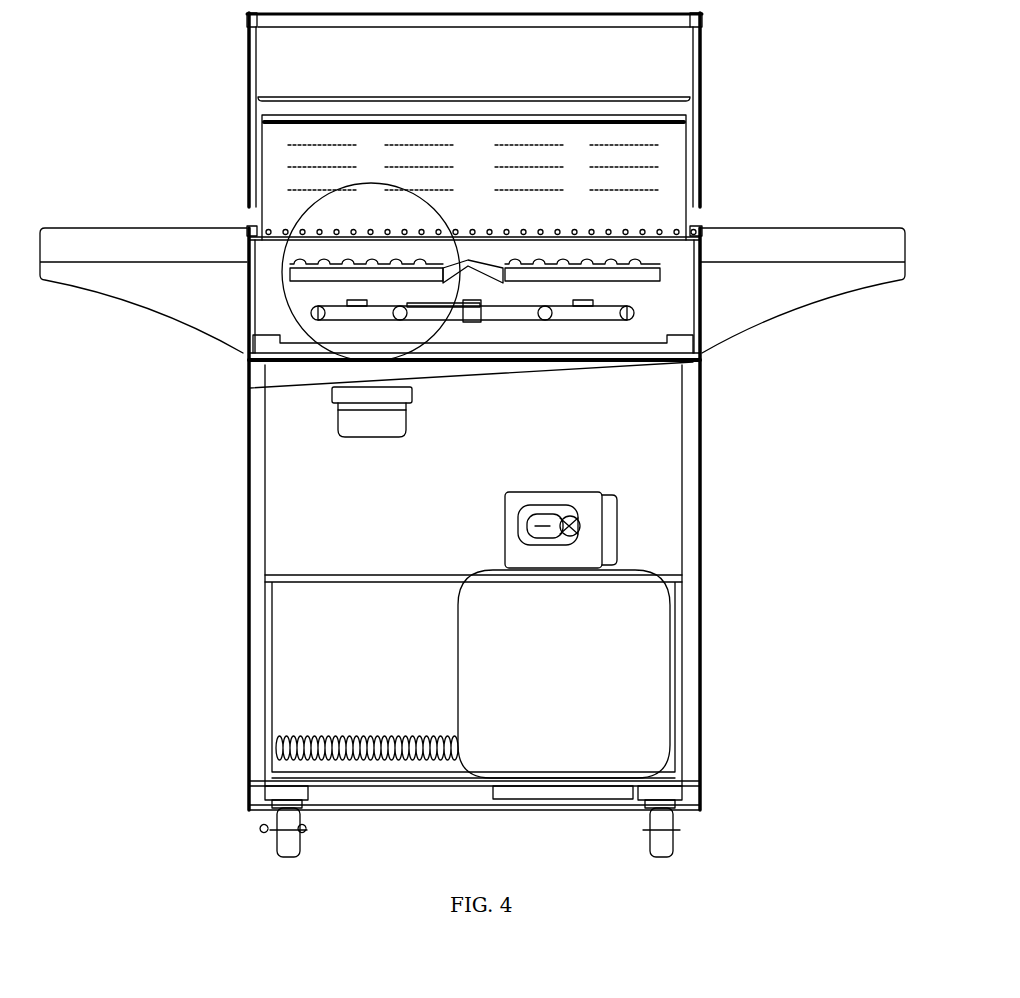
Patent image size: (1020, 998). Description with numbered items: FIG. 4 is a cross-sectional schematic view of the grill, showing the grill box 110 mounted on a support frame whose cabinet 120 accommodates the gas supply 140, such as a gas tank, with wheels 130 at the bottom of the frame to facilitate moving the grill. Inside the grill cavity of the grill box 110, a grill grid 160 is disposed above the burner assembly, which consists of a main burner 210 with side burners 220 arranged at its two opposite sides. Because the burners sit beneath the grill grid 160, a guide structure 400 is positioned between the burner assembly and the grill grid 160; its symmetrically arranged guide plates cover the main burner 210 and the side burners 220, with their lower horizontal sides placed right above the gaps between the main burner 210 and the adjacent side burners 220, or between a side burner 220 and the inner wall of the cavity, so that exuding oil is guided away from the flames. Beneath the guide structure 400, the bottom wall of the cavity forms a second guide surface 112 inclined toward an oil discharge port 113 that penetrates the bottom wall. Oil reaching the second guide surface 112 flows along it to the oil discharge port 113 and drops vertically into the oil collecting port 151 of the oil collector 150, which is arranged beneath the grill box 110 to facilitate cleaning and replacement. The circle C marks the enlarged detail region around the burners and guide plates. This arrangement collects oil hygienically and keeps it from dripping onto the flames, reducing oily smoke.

The grill box 110 is at (243, 115).
The second guide surface 112 is at (298, 375).
The oil discharge port 113 is at (355, 392).
The cabinet 120 is at (703, 620).
The wheels 130 is at (680, 840).
The gas supply 140 is at (645, 572).
The oil collector 150 is at (365, 442).
The oil collecting port 151 is at (365, 410).
The grill grid 160 is at (690, 222).
The main burner 210 is at (480, 315).
The side burner 220 is at (335, 312).
The guide structure 400 is at (307, 263).
The detail circle C is at (280, 273).